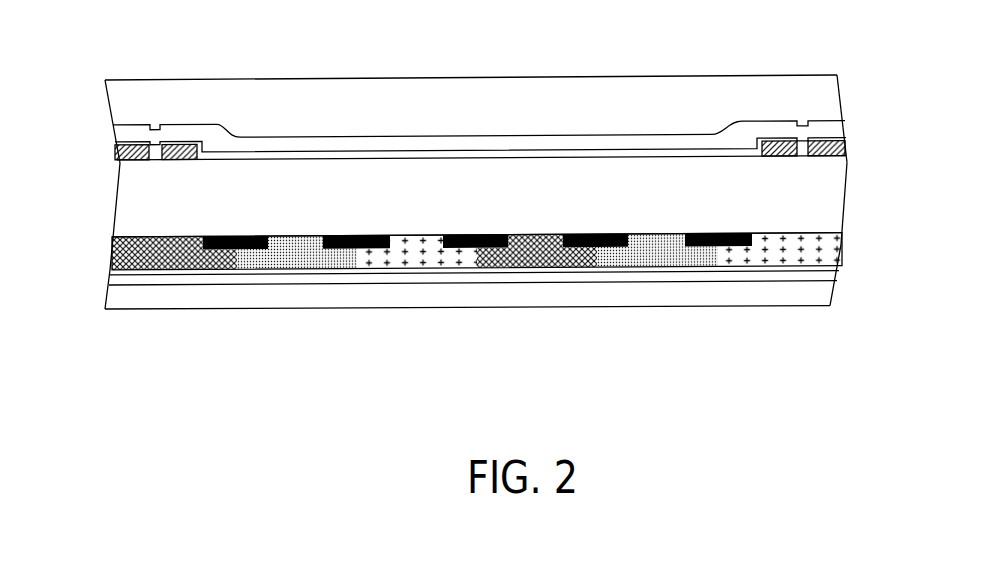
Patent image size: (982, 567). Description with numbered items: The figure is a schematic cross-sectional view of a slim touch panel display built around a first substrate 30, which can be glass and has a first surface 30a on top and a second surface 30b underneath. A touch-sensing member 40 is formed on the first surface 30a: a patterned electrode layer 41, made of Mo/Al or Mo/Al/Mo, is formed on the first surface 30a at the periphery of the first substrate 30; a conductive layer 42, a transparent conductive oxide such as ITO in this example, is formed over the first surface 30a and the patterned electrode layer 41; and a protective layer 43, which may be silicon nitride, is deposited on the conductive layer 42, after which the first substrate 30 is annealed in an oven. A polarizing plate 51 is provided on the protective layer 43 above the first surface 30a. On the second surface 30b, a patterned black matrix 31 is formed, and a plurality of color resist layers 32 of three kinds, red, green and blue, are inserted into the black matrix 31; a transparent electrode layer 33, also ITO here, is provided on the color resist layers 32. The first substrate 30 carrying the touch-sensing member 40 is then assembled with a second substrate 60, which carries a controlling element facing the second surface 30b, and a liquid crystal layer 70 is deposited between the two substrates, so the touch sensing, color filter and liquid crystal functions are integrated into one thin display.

The first substrate 30 is at (838, 202).
The first surface 30a is at (702, 158).
The second surface 30b is at (788, 235).
The patterned black matrix 31 is at (700, 250).
The color resist layers 32 is at (512, 299).
The transparent electrode layer 33 is at (432, 273).
The touch-sensing member 40 is at (540, 135).
The patterned electrode layer 41 is at (845, 151).
The conductive layer 42 is at (843, 140).
The protective layer 43 is at (832, 127).
The polarizing plate 51 is at (521, 90).
The second substrate 60 is at (825, 295).
The liquid crystal layer 70 is at (833, 276).